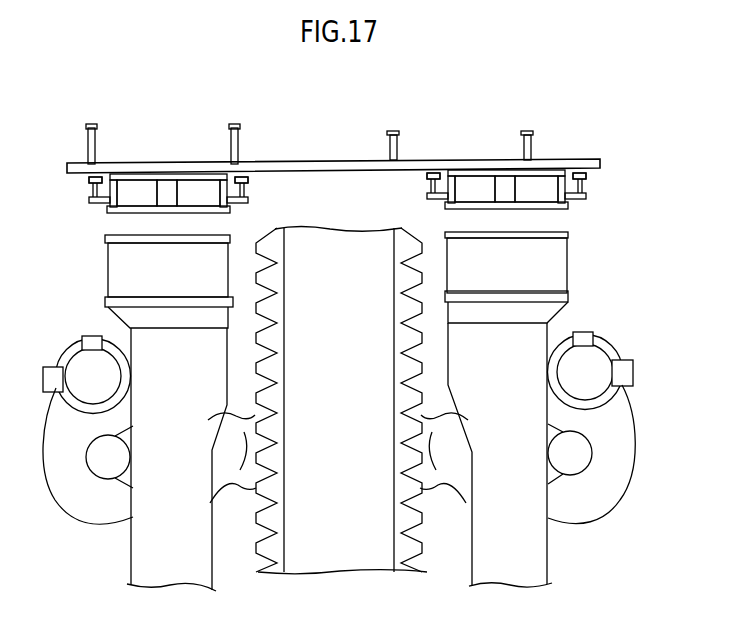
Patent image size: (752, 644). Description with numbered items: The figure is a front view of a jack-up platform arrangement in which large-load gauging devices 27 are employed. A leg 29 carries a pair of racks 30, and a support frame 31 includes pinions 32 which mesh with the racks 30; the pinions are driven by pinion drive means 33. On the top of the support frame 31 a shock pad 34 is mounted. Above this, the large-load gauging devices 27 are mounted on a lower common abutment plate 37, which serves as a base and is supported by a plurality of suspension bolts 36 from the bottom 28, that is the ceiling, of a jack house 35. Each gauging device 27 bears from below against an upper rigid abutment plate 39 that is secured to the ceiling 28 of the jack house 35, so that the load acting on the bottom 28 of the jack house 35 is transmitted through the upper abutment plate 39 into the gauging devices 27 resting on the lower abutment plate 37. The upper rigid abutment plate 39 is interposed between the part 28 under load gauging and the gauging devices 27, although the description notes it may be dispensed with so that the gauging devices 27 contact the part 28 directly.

The large-load gauging device 27 is at (137, 187).
The bottom of the jack house 28 is at (287, 166).
The leg 29 is at (350, 553).
The racks 30 is at (268, 535).
The support frame 31 is at (177, 577).
The pinions 32 is at (243, 478).
The pinion drive means 33 is at (82, 387).
The shock pad 34 is at (112, 265).
The jack house 35 is at (355, 153).
The suspension bolts 36 is at (92, 193).
The lower common abutment plate 37 is at (217, 213).
The upper rigid abutment plate 39 is at (170, 187).